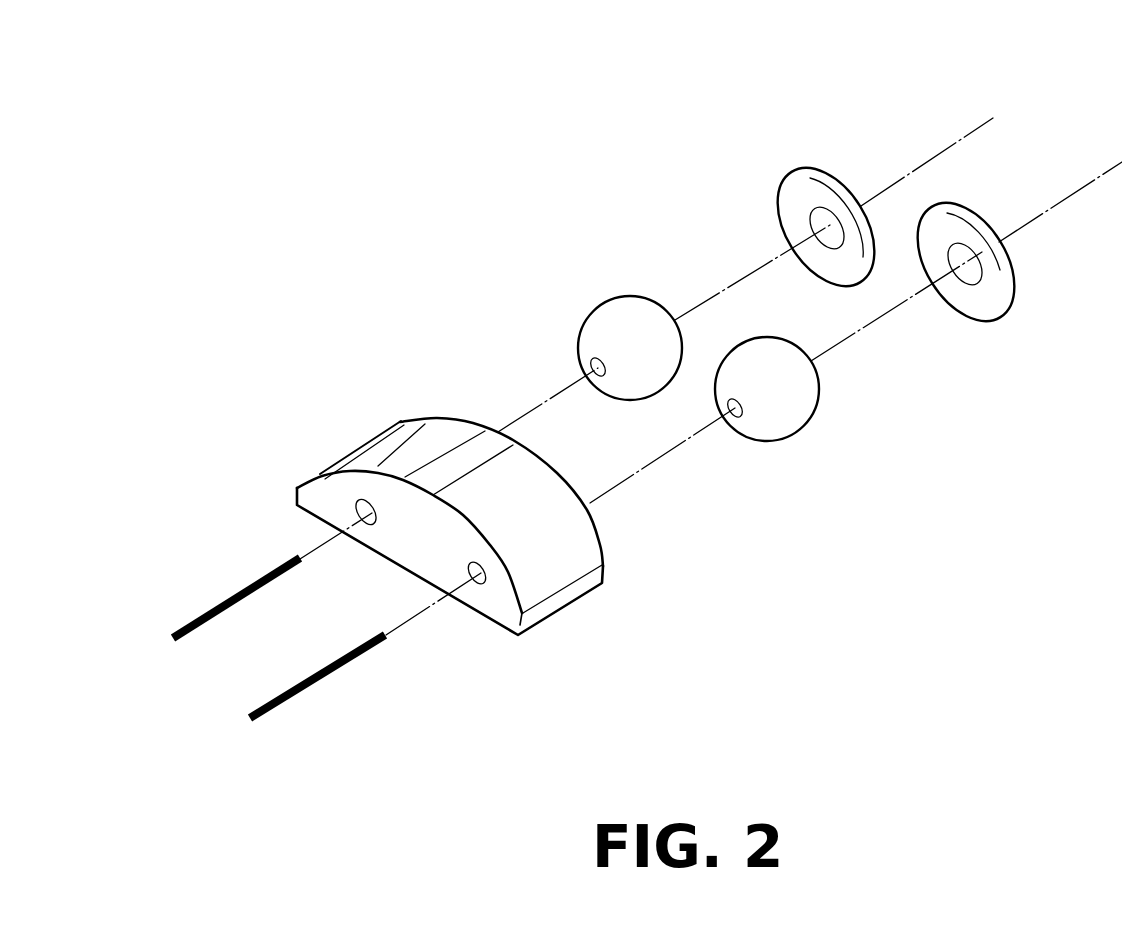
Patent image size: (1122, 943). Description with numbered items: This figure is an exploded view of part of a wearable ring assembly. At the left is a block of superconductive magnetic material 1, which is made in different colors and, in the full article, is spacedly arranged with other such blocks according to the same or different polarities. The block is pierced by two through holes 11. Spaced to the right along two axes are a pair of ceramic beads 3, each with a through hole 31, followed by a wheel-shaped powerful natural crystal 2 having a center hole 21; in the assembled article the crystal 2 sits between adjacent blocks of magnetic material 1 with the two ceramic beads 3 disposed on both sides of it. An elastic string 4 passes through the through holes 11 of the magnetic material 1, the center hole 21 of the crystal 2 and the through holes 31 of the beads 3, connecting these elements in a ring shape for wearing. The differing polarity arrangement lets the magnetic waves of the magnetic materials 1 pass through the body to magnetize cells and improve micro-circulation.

The superconductive magnetic material 1 is at (446, 418).
The through holes 11 is at (364, 506).
The powerful natural crystal 2 is at (818, 166).
The center hole 21 is at (808, 222).
The ceramic beads 3 is at (630, 296).
The through holes 31 is at (590, 361).
The elastic string 4 is at (267, 560).